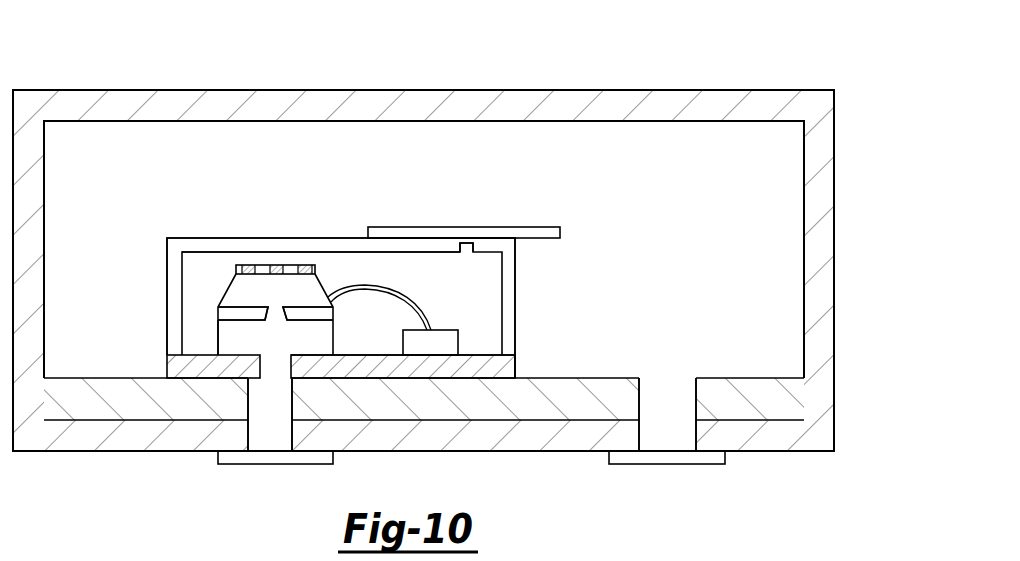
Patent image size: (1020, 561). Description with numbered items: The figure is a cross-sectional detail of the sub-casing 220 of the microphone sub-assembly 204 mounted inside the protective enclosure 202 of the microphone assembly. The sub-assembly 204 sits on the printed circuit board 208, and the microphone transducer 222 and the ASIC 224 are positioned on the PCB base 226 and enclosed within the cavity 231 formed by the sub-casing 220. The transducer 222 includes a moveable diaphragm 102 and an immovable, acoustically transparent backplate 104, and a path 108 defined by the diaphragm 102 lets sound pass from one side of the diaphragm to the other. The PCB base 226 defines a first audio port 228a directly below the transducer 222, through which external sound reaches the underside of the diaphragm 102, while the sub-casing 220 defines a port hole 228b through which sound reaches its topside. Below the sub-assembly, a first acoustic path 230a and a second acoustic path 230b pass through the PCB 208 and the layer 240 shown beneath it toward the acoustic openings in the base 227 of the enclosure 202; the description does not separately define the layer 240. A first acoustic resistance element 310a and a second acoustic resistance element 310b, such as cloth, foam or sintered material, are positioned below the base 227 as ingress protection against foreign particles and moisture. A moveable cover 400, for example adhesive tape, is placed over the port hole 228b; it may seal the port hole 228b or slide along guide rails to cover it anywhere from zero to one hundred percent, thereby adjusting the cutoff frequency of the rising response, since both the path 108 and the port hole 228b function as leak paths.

The diaphragm 102 is at (235, 307).
The backplate 104 is at (262, 265).
The path 108 is at (275, 312).
The enclosure 202 is at (760, 90).
The microphone sub-assembly 204 is at (302, 214).
The printed circuit board 208 is at (470, 352).
The sub-casing 220 is at (204, 238).
The microphone transducer 222 is at (218, 333).
The ASIC 224 is at (430, 328).
The PCB base 226 is at (505, 358).
The base 227 is at (806, 438).
The first audio port 228a is at (275, 365).
The port hole 228b is at (459, 245).
The first via 230a is at (278, 420).
The second via 230b is at (670, 420).
The cavity 231 is at (357, 248).
The substrate layer 240 is at (540, 405).
The first acoustic resistance element 310a is at (230, 467).
The second acoustic resistance element 310b is at (715, 468).
The moveable cover 400 is at (463, 227).